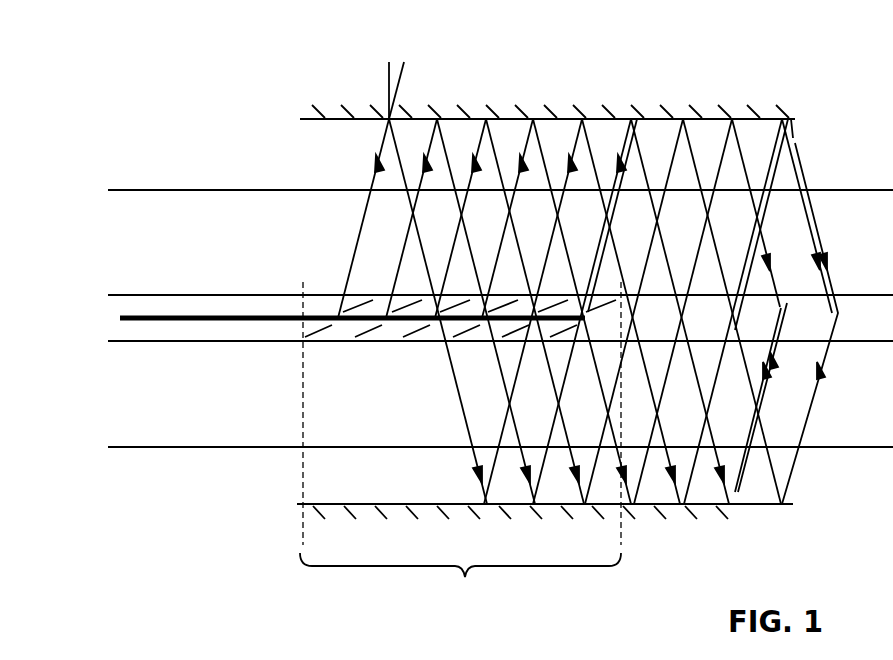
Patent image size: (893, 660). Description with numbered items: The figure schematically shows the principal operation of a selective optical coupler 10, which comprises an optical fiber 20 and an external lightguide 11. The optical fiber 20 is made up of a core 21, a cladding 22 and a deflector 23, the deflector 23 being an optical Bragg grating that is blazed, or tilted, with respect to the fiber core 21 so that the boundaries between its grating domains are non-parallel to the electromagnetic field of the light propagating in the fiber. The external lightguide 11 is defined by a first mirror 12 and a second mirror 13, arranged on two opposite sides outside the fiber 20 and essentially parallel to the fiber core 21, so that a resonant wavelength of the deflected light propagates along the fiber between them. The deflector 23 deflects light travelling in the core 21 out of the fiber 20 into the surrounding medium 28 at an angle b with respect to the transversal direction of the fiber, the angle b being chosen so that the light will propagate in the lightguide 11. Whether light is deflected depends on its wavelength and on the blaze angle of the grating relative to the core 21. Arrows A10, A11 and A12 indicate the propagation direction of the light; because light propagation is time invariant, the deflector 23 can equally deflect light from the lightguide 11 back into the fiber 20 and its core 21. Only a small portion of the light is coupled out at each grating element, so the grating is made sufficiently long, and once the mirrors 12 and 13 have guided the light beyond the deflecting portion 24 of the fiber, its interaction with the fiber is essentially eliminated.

The selective optical coupler 10 is at (116, 56).
The external lightguide 11 is at (489, 76).
The first mirror 12 is at (322, 117).
The second mirror 13 is at (746, 507).
The optical fiber 20 is at (133, 459).
The core 21 is at (125, 330).
The cladding 22 is at (143, 255).
The deflector 23 is at (377, 326).
The deflecting portion 24 is at (460, 449).
The surrounding medium 28 is at (150, 156).
The arrow A10 is at (364, 204).
The arrow A11 is at (462, 401).
The arrow A12 is at (606, 135).
The angle b is at (400, 74).